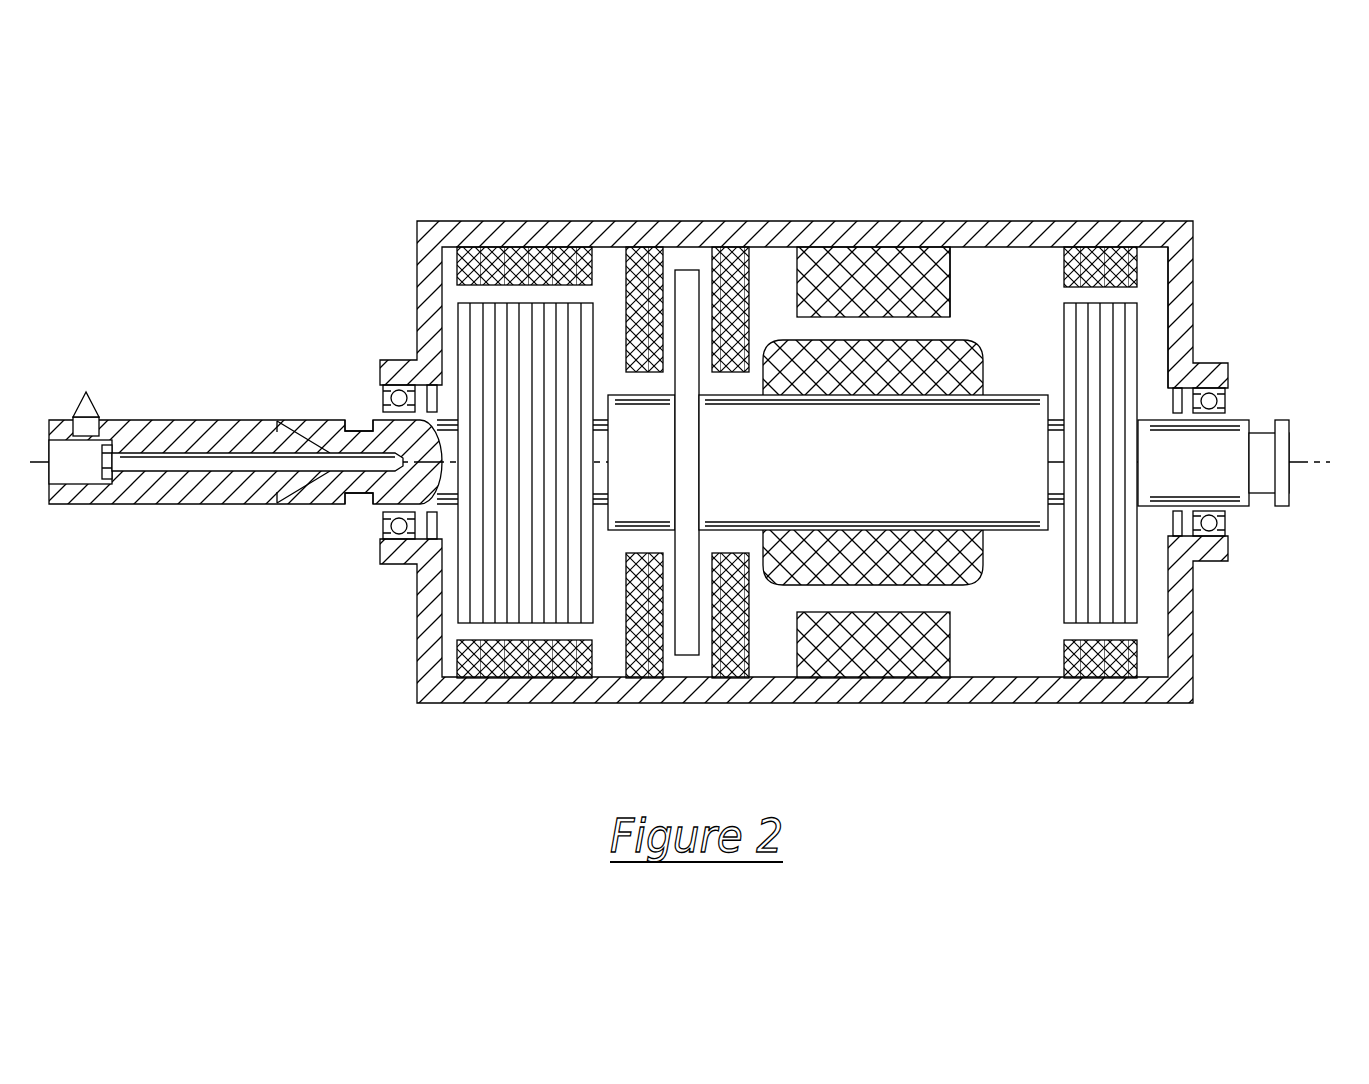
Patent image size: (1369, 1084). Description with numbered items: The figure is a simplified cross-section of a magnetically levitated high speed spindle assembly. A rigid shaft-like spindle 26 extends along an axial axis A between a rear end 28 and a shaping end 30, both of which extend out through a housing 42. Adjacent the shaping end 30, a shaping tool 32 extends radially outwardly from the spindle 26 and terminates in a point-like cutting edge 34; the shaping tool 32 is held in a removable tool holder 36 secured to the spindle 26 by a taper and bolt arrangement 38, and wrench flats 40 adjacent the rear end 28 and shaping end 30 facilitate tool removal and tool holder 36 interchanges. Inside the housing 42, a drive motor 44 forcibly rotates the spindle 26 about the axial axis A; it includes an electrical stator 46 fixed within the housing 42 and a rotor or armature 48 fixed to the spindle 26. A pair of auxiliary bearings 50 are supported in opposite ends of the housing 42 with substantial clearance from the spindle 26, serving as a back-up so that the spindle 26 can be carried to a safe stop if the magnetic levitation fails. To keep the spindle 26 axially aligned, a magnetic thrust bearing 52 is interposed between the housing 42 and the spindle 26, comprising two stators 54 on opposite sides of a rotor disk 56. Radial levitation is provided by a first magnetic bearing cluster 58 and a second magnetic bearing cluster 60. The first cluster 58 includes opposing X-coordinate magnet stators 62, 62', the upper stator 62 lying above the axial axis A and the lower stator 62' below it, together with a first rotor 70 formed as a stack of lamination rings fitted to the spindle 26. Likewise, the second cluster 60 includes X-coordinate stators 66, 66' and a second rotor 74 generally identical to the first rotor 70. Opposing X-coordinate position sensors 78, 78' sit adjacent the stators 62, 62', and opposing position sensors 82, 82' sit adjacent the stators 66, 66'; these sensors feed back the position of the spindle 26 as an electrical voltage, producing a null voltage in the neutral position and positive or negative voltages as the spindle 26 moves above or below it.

The spindle 26 is at (285, 510).
The rear end 28 is at (1290, 447).
The shaping end 30 is at (52, 504).
The shaping tool 32 is at (75, 418).
The cutting edge 34 is at (83, 420).
The tool holder 36 is at (227, 420).
The taper and bolt arrangement 38 is at (212, 465).
The wrench flats 40 is at (1252, 495).
The housing 42 is at (1000, 706).
The drive motor 44 is at (960, 285).
The electrical stator 46 is at (950, 296).
The rotor or armature 48 is at (983, 380).
The auxiliary bearings 50 is at (385, 399).
The magnetic thrust bearing 52 is at (758, 653).
The stators 54 is at (668, 660).
The rotor disk 56 is at (678, 270).
The first magnetic bearing cluster 58 is at (602, 260).
The second magnetic bearing cluster 60 is at (1036, 584).
The upper X-coordinate magnet stator 62 is at (472, 245).
The lower X-coordinate magnet stator 62' is at (471, 673).
The X-coordinate stator 66 is at (1090, 230).
The X-coordinate stator 66' is at (1090, 702).
The first rotor 70 is at (477, 582).
The second rotor 74 is at (1170, 352).
The X-coordinate position sensor 78 is at (397, 366).
The X-coordinate position sensor 78' is at (404, 560).
The X-coordinate position sensor 82 is at (1219, 355).
The X-coordinate position sensor 82' is at (1202, 566).
The axial axis A is at (1305, 466).